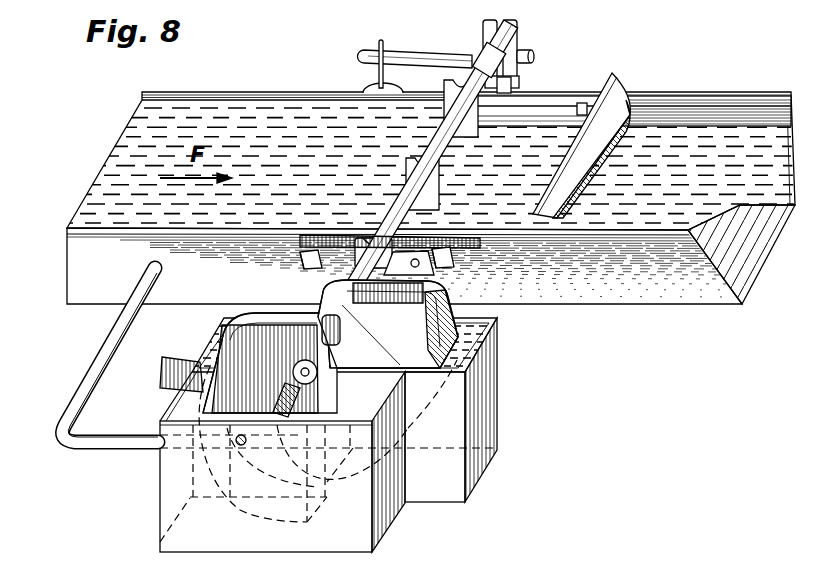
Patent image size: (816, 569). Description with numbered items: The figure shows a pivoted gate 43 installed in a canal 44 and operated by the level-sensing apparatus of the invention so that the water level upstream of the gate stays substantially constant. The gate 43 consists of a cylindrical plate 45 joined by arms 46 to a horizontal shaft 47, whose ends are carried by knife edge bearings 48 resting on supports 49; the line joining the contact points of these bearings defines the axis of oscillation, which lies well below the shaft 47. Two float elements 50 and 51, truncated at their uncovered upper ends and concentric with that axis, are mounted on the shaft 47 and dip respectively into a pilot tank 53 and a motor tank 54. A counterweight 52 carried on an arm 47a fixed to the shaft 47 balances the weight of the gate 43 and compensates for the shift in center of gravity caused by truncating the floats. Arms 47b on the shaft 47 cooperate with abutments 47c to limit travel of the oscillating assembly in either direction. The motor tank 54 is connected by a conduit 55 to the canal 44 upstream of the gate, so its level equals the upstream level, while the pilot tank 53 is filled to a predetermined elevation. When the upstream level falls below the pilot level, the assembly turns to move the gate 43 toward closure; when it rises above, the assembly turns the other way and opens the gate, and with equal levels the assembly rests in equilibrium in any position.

The gate 43 is at (573, 90).
The canal 44 is at (737, 85).
The cylindrical plate 45 is at (618, 86).
The arms 46 is at (519, 126).
The horizontal shaft 47 is at (430, 159).
The arm 47a is at (452, 55).
The arms 47b is at (300, 244).
The abutments 47c is at (306, 262).
The knife edge bearings 48 is at (499, 66).
The supports 49 is at (513, 82).
The float element 50 is at (243, 354).
The float element 51 is at (452, 306).
The counterweight 52 is at (378, 75).
The pilot tank 53 is at (388, 512).
The motor tank 54 is at (489, 366).
The conduit 55 is at (105, 450).